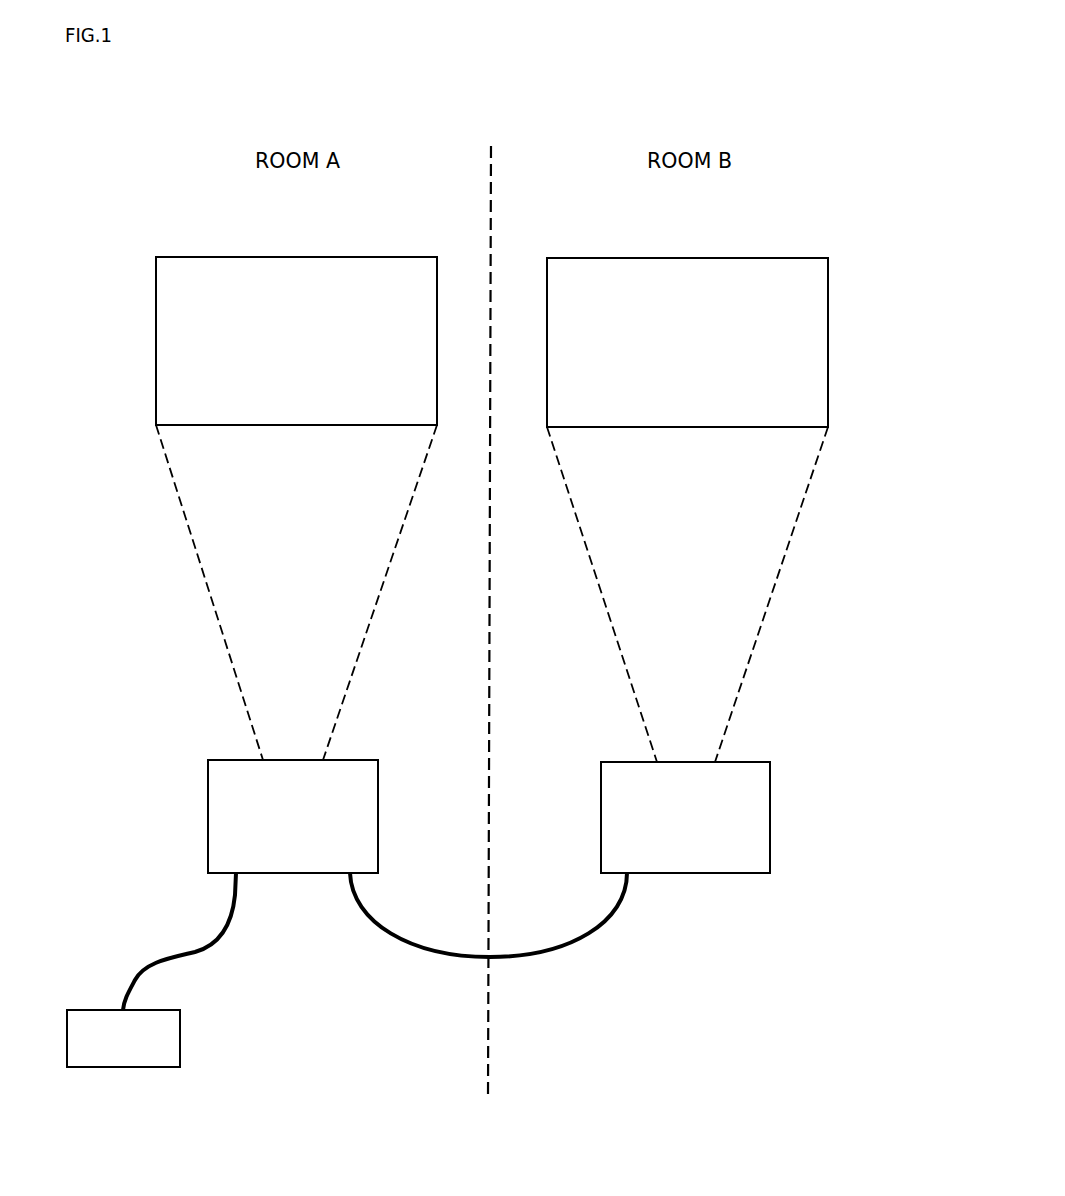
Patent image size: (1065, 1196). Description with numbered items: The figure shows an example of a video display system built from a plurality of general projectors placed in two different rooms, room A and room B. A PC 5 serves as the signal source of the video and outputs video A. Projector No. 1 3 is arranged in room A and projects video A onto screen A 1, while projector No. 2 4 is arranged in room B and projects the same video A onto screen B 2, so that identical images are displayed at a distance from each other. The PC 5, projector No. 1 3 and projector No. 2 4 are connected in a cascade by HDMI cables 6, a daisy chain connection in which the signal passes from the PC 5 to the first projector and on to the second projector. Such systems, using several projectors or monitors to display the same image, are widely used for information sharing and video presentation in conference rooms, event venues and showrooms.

The screen A 1 is at (301, 242).
The screen B 2 is at (696, 242).
The projector No. 1 3 is at (222, 760).
The projector No. 2 4 is at (740, 762).
The PC 5 is at (82, 1010).
The HDMI cables 6 is at (222, 940).